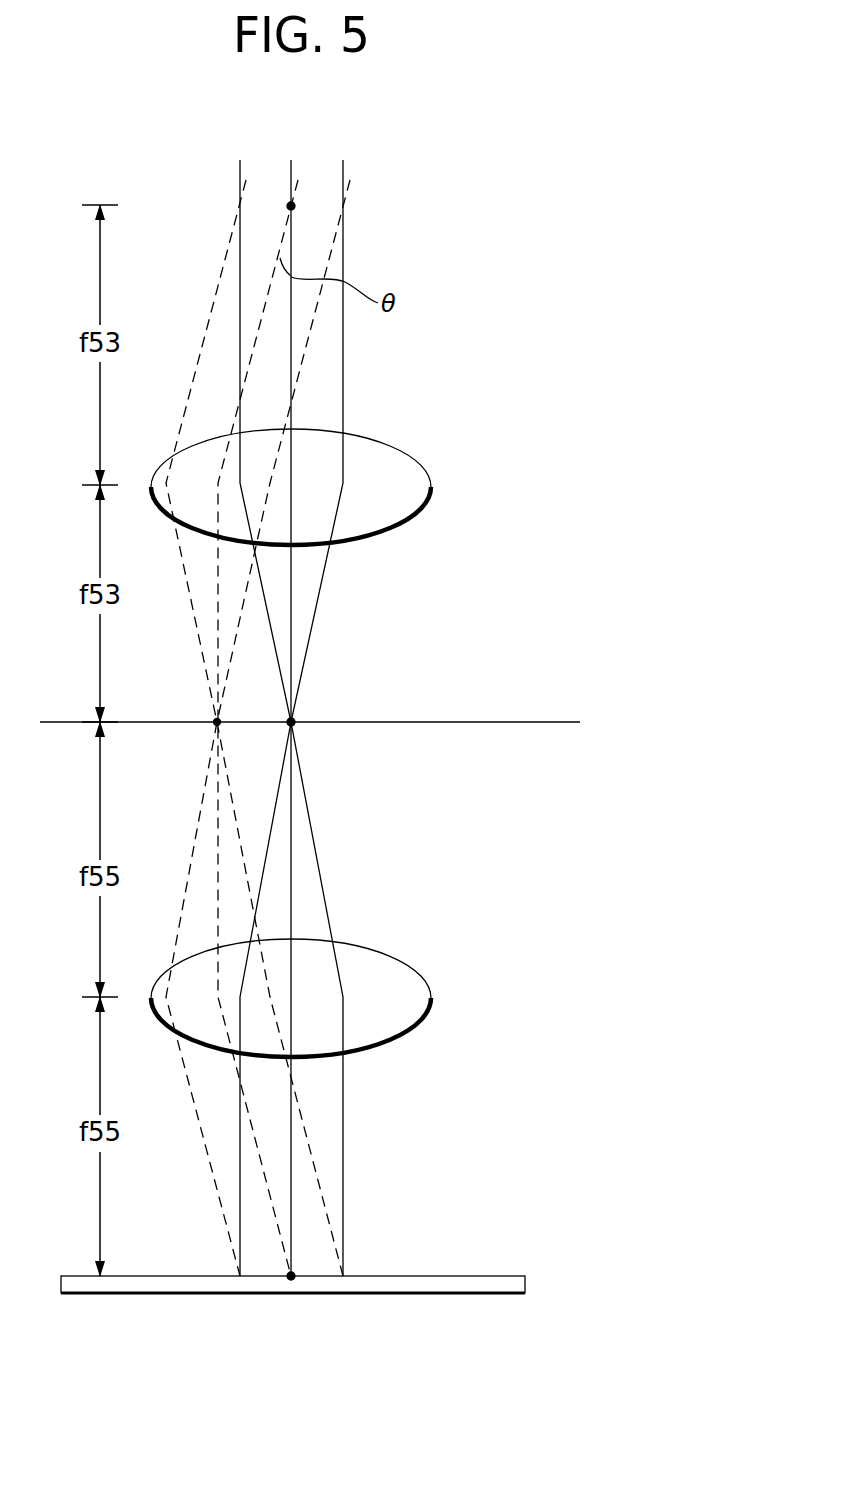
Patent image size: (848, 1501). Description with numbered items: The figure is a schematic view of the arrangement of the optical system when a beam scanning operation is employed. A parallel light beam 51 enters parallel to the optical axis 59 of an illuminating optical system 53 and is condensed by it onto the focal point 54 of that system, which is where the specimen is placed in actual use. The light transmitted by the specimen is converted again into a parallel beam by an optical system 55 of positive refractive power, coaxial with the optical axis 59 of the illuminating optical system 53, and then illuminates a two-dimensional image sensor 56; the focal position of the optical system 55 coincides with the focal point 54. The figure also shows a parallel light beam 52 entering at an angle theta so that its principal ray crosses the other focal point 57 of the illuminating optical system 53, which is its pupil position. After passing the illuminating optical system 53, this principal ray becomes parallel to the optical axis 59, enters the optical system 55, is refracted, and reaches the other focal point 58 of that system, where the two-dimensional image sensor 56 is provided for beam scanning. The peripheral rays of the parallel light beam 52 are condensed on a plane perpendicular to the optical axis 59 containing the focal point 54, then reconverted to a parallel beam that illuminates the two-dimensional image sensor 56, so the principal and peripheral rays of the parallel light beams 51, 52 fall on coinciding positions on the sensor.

The parallel light beam 51 is at (353, 151).
The parallel light beam 52 is at (247, 178).
The illuminating optical system 53 is at (432, 485).
The focal point 54 is at (291, 722).
The optical system 55 is at (432, 1000).
The two-dimensional image sensor 56 is at (468, 1276).
The other focal point 57 is at (291, 206).
The other focal point 58 is at (291, 1293).
The optical axis 59 is at (292, 590).